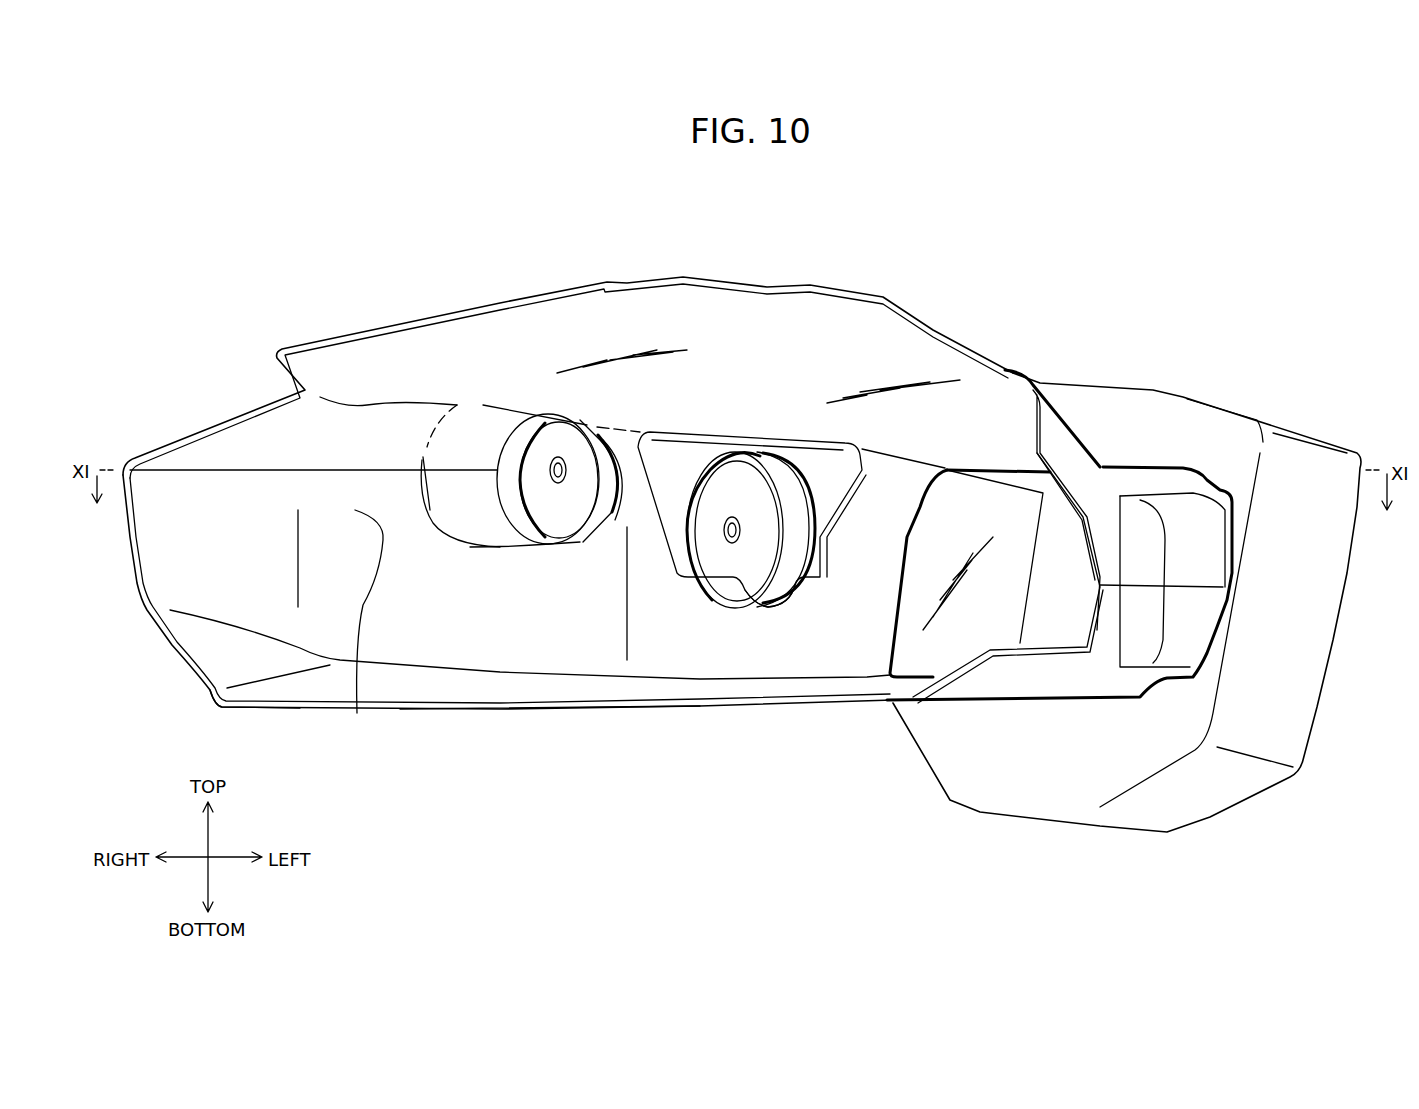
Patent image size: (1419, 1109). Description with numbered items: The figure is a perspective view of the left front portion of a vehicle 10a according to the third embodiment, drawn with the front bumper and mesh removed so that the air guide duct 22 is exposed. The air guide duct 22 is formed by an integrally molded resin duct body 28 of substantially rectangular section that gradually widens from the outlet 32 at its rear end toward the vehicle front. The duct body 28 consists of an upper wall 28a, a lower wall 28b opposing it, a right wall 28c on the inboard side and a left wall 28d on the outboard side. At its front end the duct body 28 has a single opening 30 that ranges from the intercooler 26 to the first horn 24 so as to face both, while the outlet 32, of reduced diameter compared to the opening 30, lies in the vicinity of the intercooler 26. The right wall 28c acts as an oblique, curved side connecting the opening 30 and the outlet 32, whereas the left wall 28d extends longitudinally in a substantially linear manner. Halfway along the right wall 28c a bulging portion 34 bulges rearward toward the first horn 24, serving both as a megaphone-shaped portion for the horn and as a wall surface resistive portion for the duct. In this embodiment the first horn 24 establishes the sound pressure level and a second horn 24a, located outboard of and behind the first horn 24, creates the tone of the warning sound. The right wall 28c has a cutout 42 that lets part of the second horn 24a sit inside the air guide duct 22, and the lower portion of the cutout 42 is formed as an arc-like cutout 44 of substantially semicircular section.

The vehicle 10a is at (345, 255).
The air guide duct 22 is at (537, 742).
The first horn 24 is at (554, 427).
The second horn 24a is at (714, 481).
The intercooler 26 is at (1226, 390).
The duct body 28 is at (417, 722).
The upper wall 28a is at (645, 283).
The lower wall 28b is at (675, 710).
The right wall 28c is at (133, 563).
The left wall 28d is at (1100, 503).
The opening 30 is at (293, 710).
The outlet 32 is at (1005, 511).
The bulging portion 34 is at (450, 545).
The cutout 42 is at (795, 449).
The arc-like cutout 44 is at (789, 607).